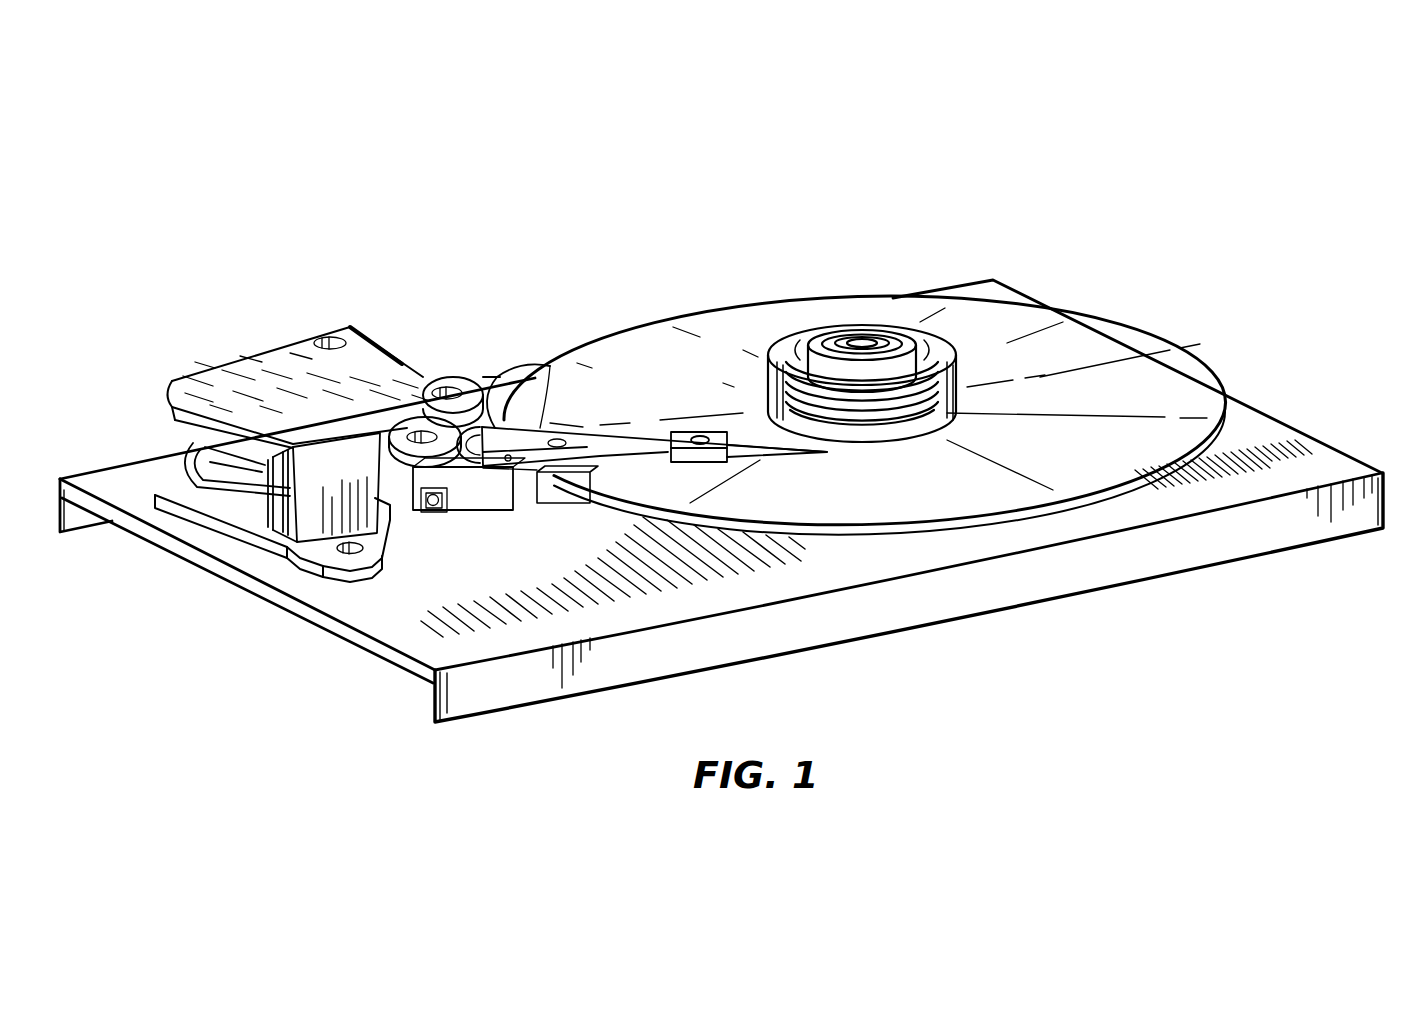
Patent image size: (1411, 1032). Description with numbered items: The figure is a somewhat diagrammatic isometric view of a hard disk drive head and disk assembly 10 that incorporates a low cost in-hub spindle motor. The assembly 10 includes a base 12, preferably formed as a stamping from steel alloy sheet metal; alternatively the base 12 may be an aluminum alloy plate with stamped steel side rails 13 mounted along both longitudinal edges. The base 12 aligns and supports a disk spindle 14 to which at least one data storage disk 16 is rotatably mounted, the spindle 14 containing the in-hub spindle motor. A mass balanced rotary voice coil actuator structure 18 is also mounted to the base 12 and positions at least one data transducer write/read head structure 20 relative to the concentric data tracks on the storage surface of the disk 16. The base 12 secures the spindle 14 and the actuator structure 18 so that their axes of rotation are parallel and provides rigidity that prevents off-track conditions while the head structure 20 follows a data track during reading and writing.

The disk drive head and disk assembly 10 is at (248, 652).
The base 12 is at (1332, 456).
The side rails 13 is at (1183, 543).
The disk spindle 14 is at (862, 322).
The data storage disk 16 is at (1183, 378).
The rotary voice coil actuator structure 18 is at (281, 360).
The data transducer write/read head structure 20 is at (827, 452).